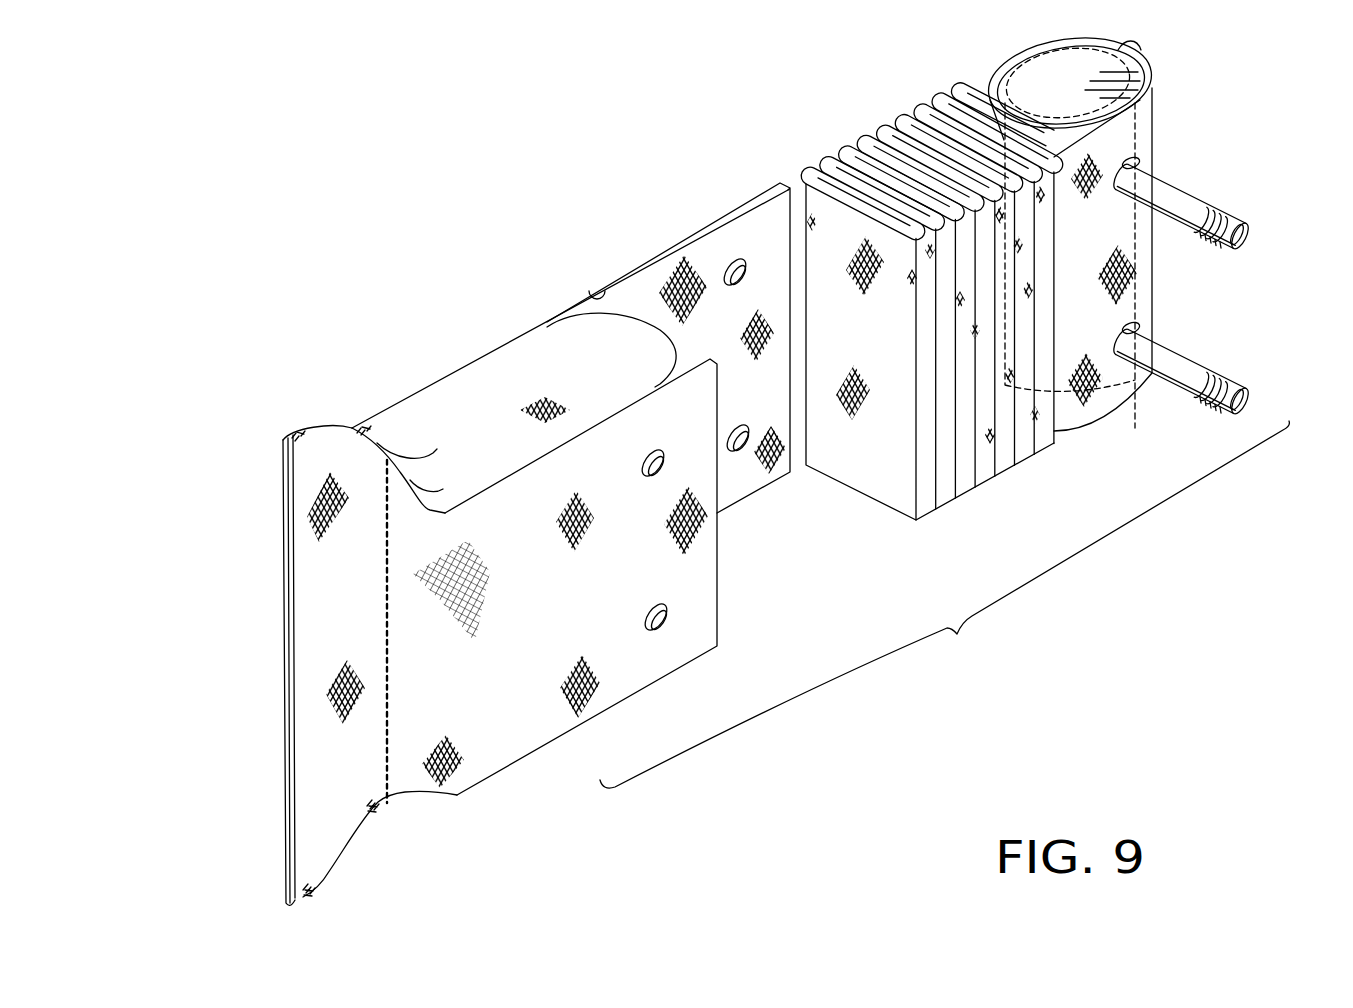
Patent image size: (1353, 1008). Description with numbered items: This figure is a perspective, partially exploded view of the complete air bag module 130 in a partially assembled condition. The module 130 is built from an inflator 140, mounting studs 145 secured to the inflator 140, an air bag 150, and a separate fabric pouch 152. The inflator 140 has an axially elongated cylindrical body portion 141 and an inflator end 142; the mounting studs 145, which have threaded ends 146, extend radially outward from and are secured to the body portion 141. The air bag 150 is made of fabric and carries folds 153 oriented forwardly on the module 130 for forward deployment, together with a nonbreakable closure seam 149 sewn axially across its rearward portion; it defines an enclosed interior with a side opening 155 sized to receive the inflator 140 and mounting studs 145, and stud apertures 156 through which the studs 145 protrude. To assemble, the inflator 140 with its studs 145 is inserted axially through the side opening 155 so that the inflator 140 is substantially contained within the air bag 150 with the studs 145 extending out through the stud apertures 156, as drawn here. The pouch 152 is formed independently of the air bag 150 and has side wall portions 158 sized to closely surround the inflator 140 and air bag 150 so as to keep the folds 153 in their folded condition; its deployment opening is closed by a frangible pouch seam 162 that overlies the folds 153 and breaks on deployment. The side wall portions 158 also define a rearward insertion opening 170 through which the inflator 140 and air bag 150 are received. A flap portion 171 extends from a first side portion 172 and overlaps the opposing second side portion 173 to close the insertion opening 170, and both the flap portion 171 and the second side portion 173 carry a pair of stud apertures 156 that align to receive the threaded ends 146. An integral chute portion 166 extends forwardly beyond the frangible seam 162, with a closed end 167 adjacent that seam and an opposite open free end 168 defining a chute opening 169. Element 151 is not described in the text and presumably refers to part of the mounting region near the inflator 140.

The air bag module 130 is at (475, 300).
The inflator 140 is at (1152, 98).
The cylindrical body portion 141 is at (1072, 279).
The inflator end 142 is at (1140, 96).
The mounting studs 145 is at (1200, 366).
The threaded ends 146 is at (1228, 222).
The closure seam 149 is at (1143, 53).
The air bag 150 is at (943, 95).
The heat sink base 151 is at (990, 85).
The fabric pouch 152 is at (522, 333).
The folds 153 is at (855, 148).
The side opening 155 is at (1000, 55).
The stud apertures 156 is at (735, 258).
The side wall portions 158 is at (417, 410).
The frangible pouch seam 162 is at (388, 753).
The chute portion 166 is at (333, 440).
The closed end 167 is at (377, 780).
The free end 168 is at (322, 875).
The chute opening 169 is at (285, 884).
The insertion opening 170 is at (597, 293).
The flap portion 171 is at (643, 267).
The first side portion 172 is at (450, 372).
The second side portion 173 is at (503, 737).